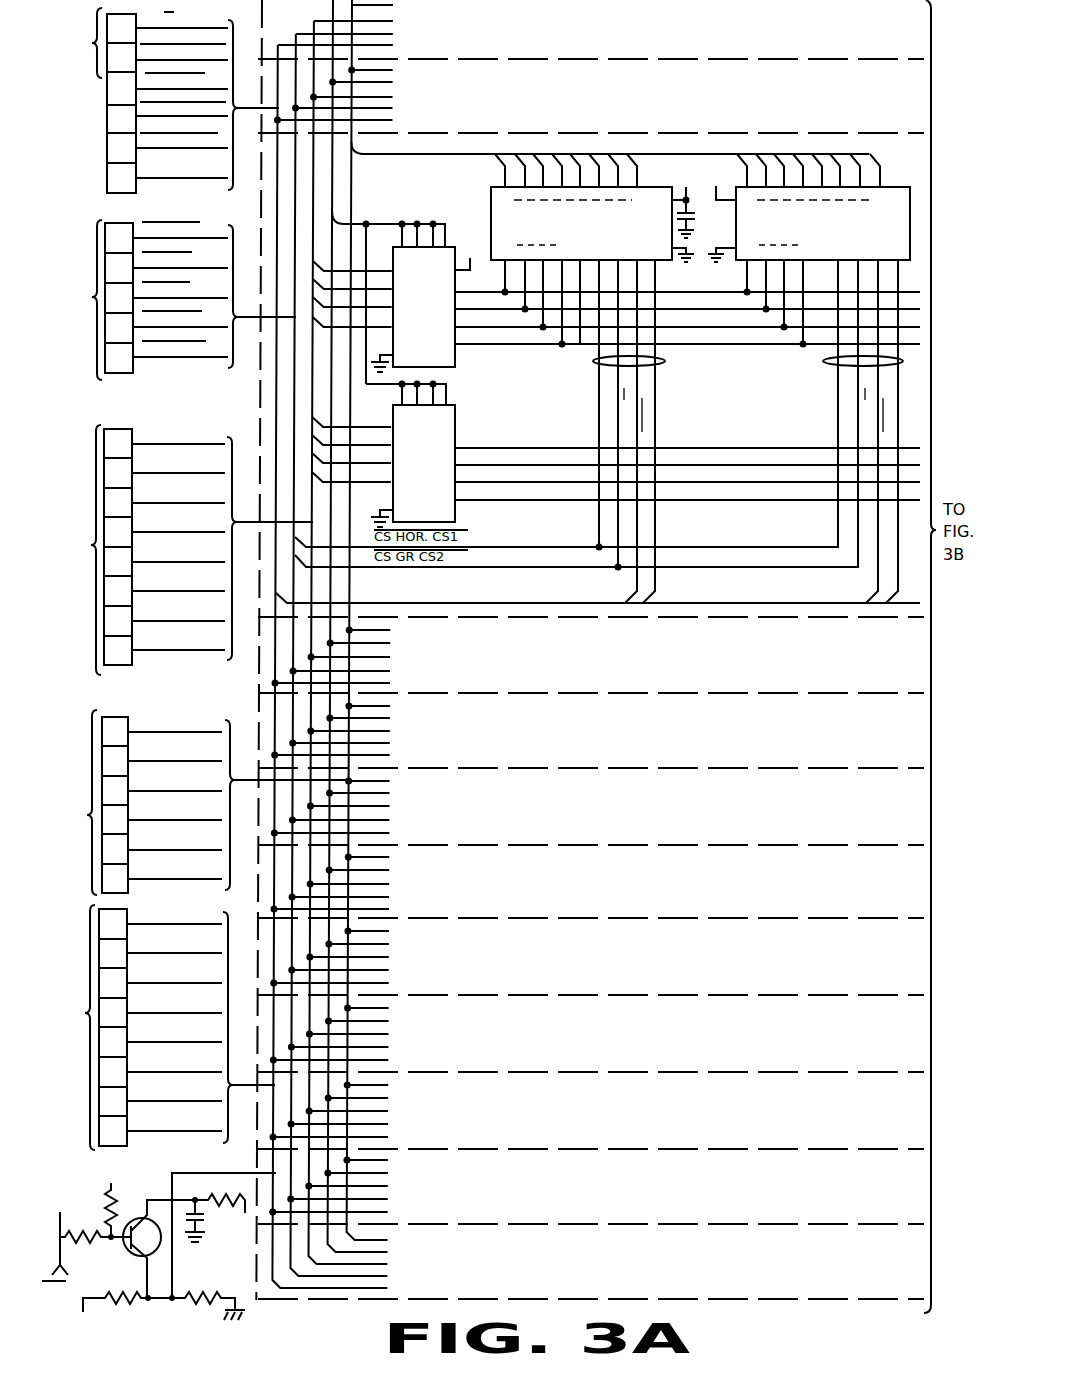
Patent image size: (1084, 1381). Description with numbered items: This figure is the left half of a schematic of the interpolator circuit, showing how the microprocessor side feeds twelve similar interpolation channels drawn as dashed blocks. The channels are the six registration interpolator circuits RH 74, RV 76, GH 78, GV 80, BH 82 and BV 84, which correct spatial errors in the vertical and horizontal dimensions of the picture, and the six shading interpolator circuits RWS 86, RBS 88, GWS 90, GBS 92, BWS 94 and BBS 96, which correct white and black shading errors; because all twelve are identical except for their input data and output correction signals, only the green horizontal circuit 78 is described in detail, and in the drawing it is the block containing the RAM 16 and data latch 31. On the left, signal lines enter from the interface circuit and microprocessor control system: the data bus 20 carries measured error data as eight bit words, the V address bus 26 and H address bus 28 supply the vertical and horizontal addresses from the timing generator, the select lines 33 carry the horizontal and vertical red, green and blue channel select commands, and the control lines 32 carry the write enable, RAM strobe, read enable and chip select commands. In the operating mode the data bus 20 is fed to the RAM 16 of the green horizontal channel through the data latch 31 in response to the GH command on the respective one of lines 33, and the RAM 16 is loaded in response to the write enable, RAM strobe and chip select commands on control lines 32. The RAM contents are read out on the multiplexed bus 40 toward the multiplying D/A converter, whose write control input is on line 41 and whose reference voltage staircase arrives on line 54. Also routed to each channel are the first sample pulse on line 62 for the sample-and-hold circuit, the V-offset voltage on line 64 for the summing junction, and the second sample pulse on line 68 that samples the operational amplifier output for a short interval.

The random access memory (RAM) 16 is at (716, 264).
The data bus 20 is at (96, 492).
The V address bus 26 is at (90, 947).
The H address bus 28 is at (90, 1100).
The data latch 31 is at (446, 402).
The control lines 32 is at (97, 255).
The select command lines 33 is at (92, 757).
The multiplexed bus 40 is at (918, 347).
The write control line 41 is at (107, 92).
The reference voltage line 54 is at (107, 121).
The sample-1 pulse line 62 is at (107, 181).
The V-offset voltage line 64 is at (107, 152).
The sample-2 pulse line 68 is at (159, 1246).
The RH registration interpolator circuit 74 is at (742, 31).
The RV registration interpolator circuit 76 is at (742, 111).
The GH registration interpolator circuit 78 is at (754, 412).
The GV registration interpolator circuit 80 is at (748, 666).
The BH registration interpolator circuit 82 is at (748, 741).
The BV registration interpolator circuit 84 is at (748, 817).
The RWS shading interpolator circuit 86 is at (748, 896).
The RBS shading interpolator circuit 88 is at (748, 969).
The GWS shading interpolator circuit 90 is at (748, 1044).
The GBS shading interpolator circuit 92 is at (748, 1122).
The BWS shading interpolator circuit 94 is at (748, 1197).
The BBS shading interpolator circuit 96 is at (748, 1272).